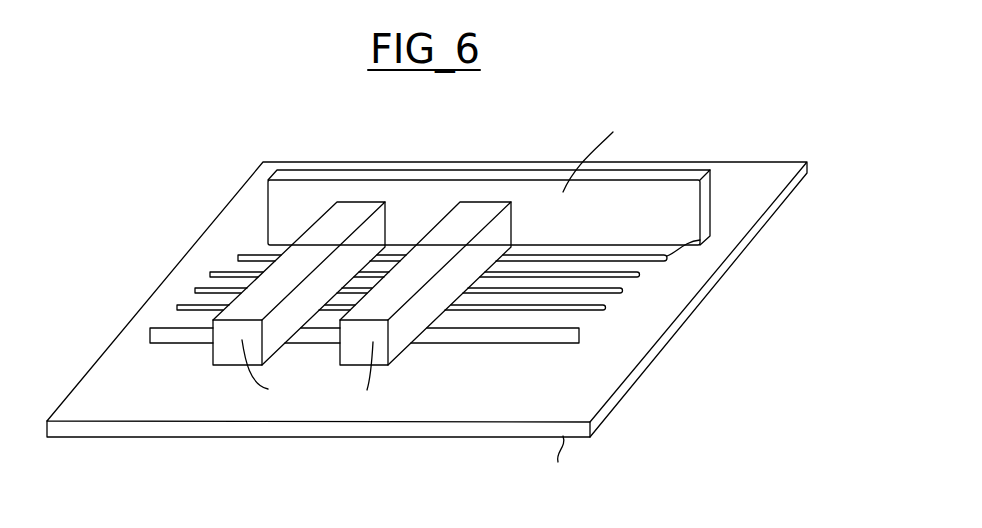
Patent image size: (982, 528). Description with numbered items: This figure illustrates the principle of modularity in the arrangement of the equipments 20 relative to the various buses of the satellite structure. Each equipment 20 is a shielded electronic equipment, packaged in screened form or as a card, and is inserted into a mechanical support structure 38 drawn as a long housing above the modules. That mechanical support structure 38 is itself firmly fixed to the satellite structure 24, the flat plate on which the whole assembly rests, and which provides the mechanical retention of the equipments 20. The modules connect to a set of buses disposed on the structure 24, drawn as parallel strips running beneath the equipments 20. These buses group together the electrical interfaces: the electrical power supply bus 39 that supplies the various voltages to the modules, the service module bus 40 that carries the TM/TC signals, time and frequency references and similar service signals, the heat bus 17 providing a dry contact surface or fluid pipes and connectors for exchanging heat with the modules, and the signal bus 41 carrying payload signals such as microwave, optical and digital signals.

The mechanical support structure 38 is at (280, 202).
The electrical power supply bus 39 is at (710, 239).
The service module bus 40 is at (813, 276).
The heat bus 17 is at (603, 308).
The signal bus 41 is at (578, 347).
The structure 24 is at (252, 428).
The equipment 20 is at (213, 361).